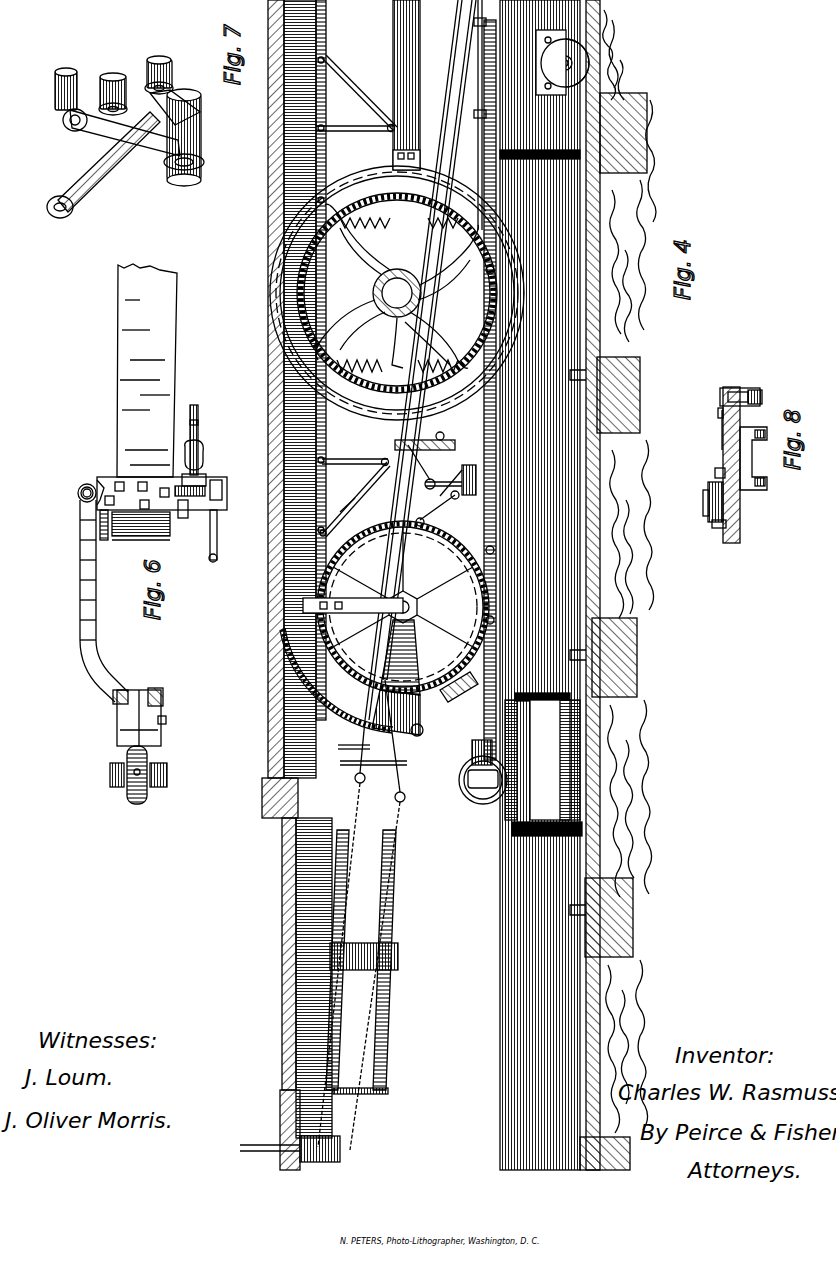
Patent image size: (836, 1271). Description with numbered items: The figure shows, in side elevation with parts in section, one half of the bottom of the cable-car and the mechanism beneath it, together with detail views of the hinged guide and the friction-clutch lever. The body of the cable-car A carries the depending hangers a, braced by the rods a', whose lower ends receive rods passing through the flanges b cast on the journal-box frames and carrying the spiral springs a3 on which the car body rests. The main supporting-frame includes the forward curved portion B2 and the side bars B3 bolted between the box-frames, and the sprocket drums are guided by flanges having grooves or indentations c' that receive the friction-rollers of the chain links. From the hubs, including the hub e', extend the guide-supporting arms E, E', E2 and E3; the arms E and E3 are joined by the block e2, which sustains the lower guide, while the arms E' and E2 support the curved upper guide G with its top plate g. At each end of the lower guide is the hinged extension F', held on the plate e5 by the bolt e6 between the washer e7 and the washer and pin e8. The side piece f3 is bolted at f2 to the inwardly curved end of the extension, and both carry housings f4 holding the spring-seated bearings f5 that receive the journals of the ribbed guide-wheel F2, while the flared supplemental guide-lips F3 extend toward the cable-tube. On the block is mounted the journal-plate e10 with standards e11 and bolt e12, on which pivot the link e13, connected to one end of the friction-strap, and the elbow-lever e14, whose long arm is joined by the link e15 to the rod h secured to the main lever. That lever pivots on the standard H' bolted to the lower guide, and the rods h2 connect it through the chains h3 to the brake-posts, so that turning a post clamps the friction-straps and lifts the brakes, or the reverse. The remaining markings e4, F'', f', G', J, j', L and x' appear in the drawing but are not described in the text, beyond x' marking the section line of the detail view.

In FIG. 4, the body of the cable-car A is at (290, 585).
In FIG. 4, the hangers a is at (359, 92).
In FIG. 4, the rods a' is at (355, 285).
In FIG. 4, the spiral springs a3 is at (397, 295).
In FIG. 4, the forward curved portion of the main supporting-frame B2 is at (356, 499).
In FIG. 4, the side bars of the main frame B3 is at (406, 85).
In FIG. 4, the flanges b is at (397, 293).
In FIG. 4, the grooves or indentations c' is at (356, 509).
In FIG. 4, the guide-supporting arm E is at (420, 360).
In FIG. 4, the guide-supporting arm E' is at (403, 628).
In FIG. 4, the guide-supporting arm E2 is at (353, 611).
In FIG. 6, the guide-supporting arm E2 is at (107, 537).
In FIG. 6, the guide-supporting arm E3 is at (226, 536).
In FIG. 4, the hub e' is at (443, 510).
In FIG. 4, the block e2 is at (476, 463).
In FIG. 6, the block e2 is at (125, 480).
In FIG. 8, the block e2 is at (753, 478).
In FIG. 6, the slot e4 is at (222, 490).
In FIG. 6, the plate e5 is at (100, 478).
In FIG. 8, the plate e5 is at (722, 418).
In FIG. 6, the bolt e6 is at (90, 485).
In FIG. 8, the washer e7 is at (733, 388).
In FIG. 8, the washer and pin e8 is at (754, 381).
In FIG. 4, the journal-plate e10 is at (450, 461).
In FIG. 6, the journal-plate e10 is at (200, 485).
In FIG. 8, the journal-plate e10 is at (715, 470).
In FIG. 4, the standards e11 is at (453, 468).
In FIG. 7, the standards e11 is at (186, 108).
In FIG. 6, the standards e11 is at (185, 510).
In FIG. 8, the standards e11 is at (710, 486).
In FIG. 4, the bolt e12 is at (430, 466).
In FIG. 7, the bolt e12 is at (203, 175).
In FIG. 8, the bolt e12 is at (703, 505).
In FIG. 4, the link e13 is at (451, 491).
In FIG. 7, the link e13 is at (140, 153).
In FIG. 7, the elbow-lever e14 is at (83, 205).
In FIG. 6, the link e15 is at (190, 445).
In FIG. 4, the extension F' is at (517, 390).
In FIG. 6, the extension F' is at (147, 370).
In FIG. 8, the extension F' is at (749, 465).
In FIG. 6, the strap F'' is at (87, 601).
In FIG. 4, the guide-wheel F2 is at (466, 752).
In FIG. 6, the guide-wheel F2 is at (130, 800).
In FIG. 4, the supplemental guide-lips F3 is at (459, 687).
In FIG. 6, the supplemental guide-lips F3 is at (110, 722).
In FIG. 6, the pin f' is at (116, 768).
In FIG. 6, the bolt f2 is at (175, 728).
In FIG. 6, the side piece f3 is at (165, 745).
In FIG. 4, the housings f4 is at (468, 782).
In FIG. 6, the housings f4 is at (110, 768).
In FIG. 4, the spring-seated bearings f5 is at (480, 804).
In FIG. 4, the curved upper guide G is at (397, 449).
In FIG. 6, the plate G' is at (141, 552).
In FIG. 4, the top plate g is at (372, 748).
In FIG. 4, the standard H' is at (484, 115).
In FIG. 6, the rod h is at (197, 413).
In FIG. 4, the rods h2 is at (388, 741).
In FIG. 4, the chains h3 is at (359, 966).
In FIG. 4, the rack bar J is at (326, 140).
In FIG. 4, the pin j' is at (332, 514).
In FIG. 4, the platform L is at (578, 585).
In FIG. 6, the pivot axis x' is at (148, 495).